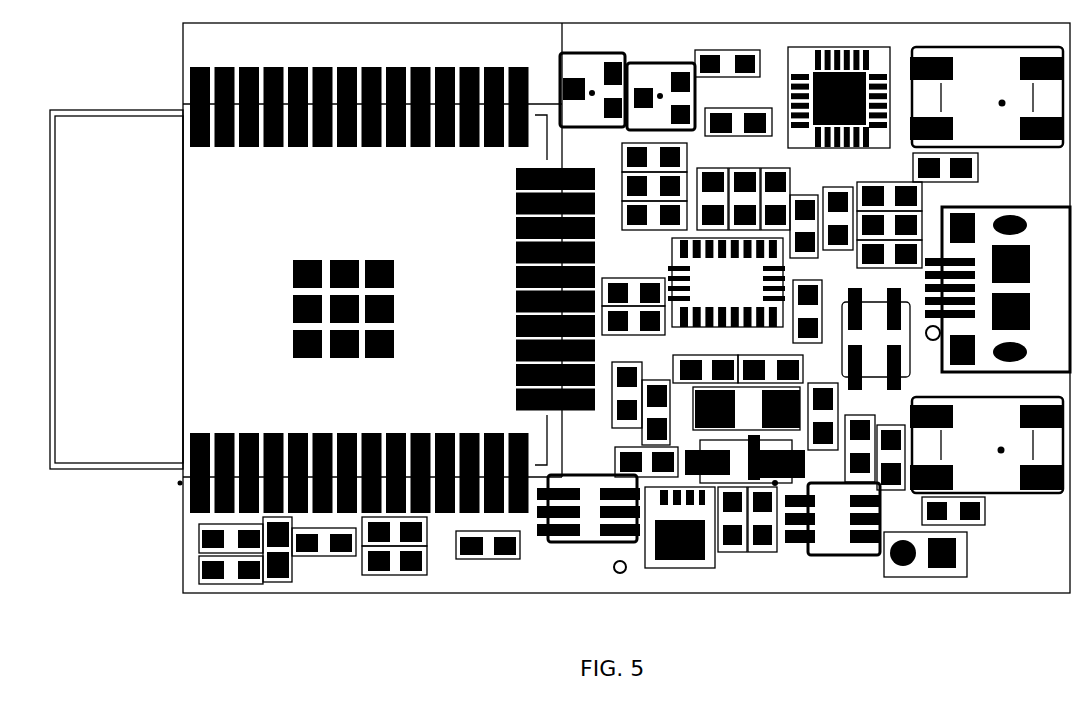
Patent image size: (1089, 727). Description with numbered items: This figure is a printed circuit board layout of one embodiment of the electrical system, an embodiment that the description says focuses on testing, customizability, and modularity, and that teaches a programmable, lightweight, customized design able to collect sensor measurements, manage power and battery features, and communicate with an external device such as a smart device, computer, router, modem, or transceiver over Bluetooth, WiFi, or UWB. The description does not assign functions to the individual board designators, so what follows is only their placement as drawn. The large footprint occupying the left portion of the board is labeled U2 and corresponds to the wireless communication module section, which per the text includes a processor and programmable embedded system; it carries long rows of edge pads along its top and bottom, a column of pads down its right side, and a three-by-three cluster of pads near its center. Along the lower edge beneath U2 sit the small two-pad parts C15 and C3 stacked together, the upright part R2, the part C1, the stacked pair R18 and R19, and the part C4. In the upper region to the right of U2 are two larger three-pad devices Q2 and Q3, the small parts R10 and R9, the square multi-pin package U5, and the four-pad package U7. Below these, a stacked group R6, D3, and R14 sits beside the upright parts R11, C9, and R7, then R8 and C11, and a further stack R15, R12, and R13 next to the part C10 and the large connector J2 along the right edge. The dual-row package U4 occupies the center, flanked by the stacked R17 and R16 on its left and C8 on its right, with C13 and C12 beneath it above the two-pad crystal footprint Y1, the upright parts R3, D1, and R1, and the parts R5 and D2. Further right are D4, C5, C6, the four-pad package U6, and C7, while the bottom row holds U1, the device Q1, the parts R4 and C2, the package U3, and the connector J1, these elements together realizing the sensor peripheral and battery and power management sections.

The wireless module U2 is at (389, 268).
The transistor Q2 is at (592, 77).
The transistor Q3 is at (661, 84).
The resistor R10 is at (727, 57).
The resistor R9 is at (738, 116).
The integrated circuit U5 is at (839, 91).
The integrated circuit U7 is at (986, 90).
The resistor R6 is at (643, 157).
The diode D3 is at (643, 186).
The resistor R14 is at (654, 225).
The resistor R11 is at (712, 192).
The capacitor C9 is at (744, 192).
The resistor R7 is at (775, 192).
The resistor R8 is at (804, 220).
The capacitor C11 is at (838, 211).
The resistor R15 is at (898, 213).
The resistor R12 is at (898, 220).
The resistor R13 is at (889, 261).
The capacitor C10 is at (958, 167).
The connector J2 is at (997, 276).
The integrated circuit U4 is at (726, 282).
The resistor R17 is at (633, 286).
The resistor R16 is at (633, 327).
The capacitor C8 is at (807, 305).
The capacitor C13 is at (705, 362).
The capacitor C12 is at (770, 362).
The resistor R3 is at (622, 389).
The diode D1 is at (656, 406).
The crystal oscillator Y1 is at (740, 408).
The resistor R1 is at (823, 407).
The resistor R5 is at (646, 456).
The diode D2 is at (744, 458).
The diode D4 is at (869, 339).
The capacitor C5 is at (860, 441).
The capacitor C6 is at (891, 450).
The integrated circuit U6 is at (986, 445).
The capacitor C7 is at (972, 513).
The connector J1 is at (925, 547).
The integrated circuit U3 is at (832, 535).
The integrated circuit U1 is at (588, 526).
The transistor Q1 is at (664, 530).
The resistor R4 is at (732, 526).
The capacitor C2 is at (762, 526).
The capacitor C15 is at (225, 538).
The capacitor C3 is at (225, 570).
The resistor R2 is at (285, 549).
The capacitor C1 is at (324, 536).
The resistor R18 is at (407, 531).
The resistor R19 is at (407, 560).
The capacitor C4 is at (488, 538).